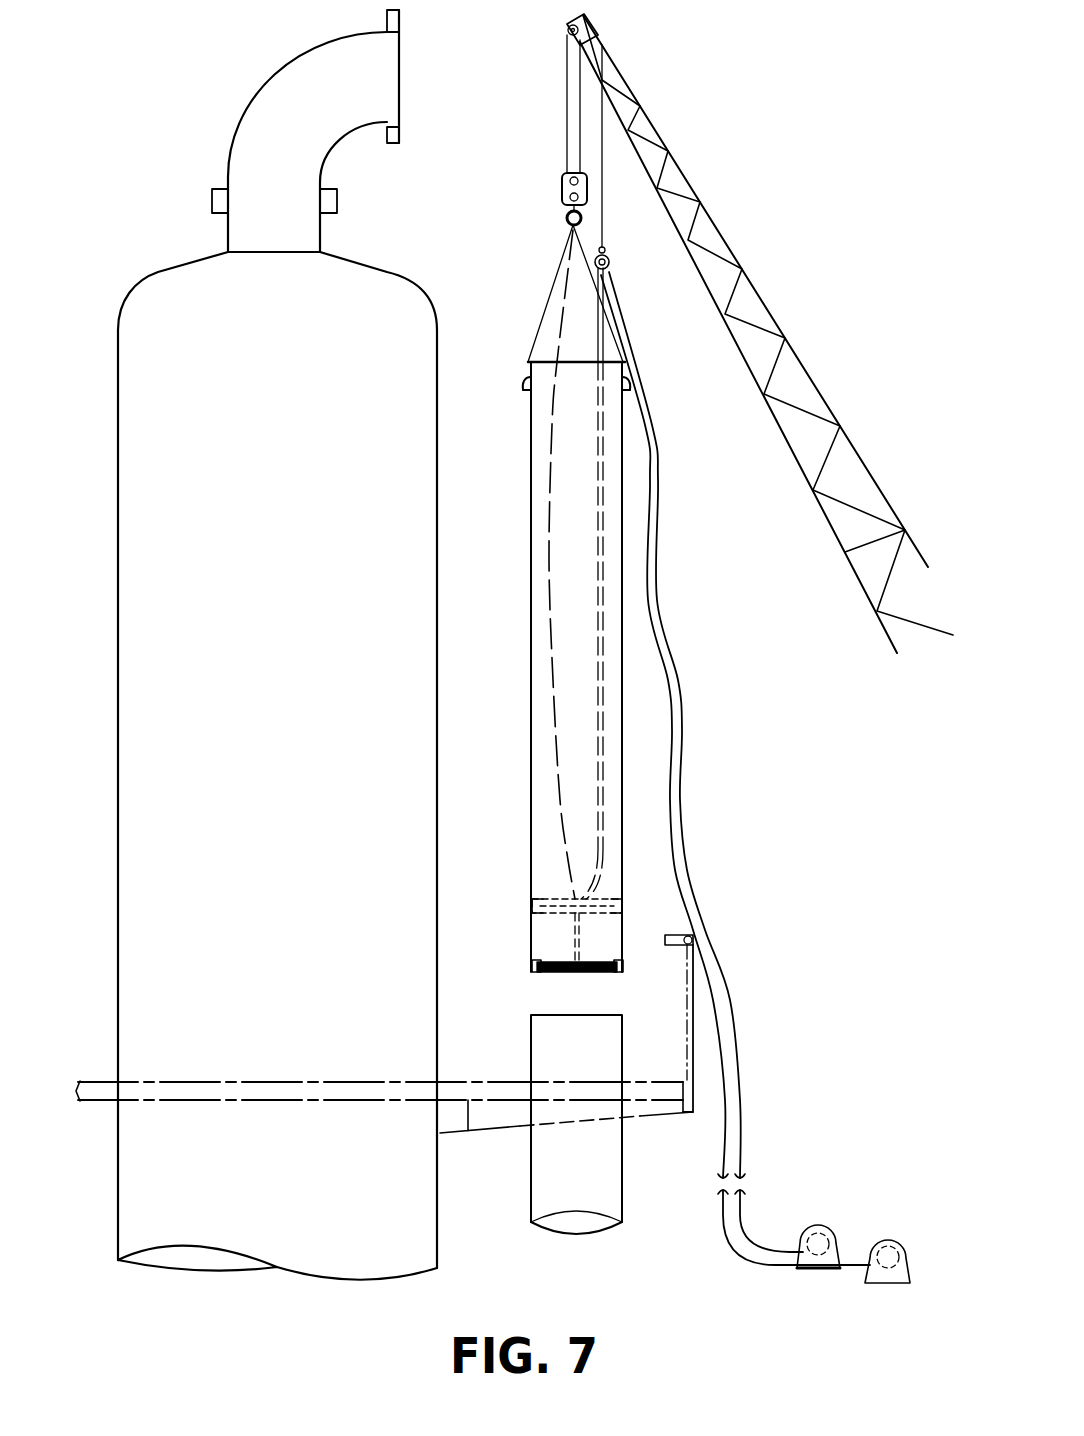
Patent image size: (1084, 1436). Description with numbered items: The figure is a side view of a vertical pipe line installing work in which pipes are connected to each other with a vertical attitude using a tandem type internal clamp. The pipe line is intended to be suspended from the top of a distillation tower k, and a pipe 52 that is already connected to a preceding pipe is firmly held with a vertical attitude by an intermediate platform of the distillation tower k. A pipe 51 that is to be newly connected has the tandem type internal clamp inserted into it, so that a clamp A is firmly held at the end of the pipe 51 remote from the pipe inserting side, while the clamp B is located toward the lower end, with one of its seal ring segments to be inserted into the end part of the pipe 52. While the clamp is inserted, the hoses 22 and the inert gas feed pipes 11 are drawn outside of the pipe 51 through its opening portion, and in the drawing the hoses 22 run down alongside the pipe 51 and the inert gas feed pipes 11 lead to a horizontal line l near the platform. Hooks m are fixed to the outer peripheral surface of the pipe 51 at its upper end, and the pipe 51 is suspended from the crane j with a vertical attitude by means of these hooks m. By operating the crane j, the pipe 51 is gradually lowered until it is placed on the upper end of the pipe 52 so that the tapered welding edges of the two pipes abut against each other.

The crane j is at (721, 222).
The distillation tower k is at (405, 480).
The hooks m is at (520, 384).
The pipe 51 is at (530, 556).
The clamp A is at (532, 904).
The clamp B is at (535, 968).
The pipe l is at (655, 1090).
The inert gas feed pipes 11 is at (716, 1008).
The hoses 22 is at (730, 990).
The pipe 52 is at (600, 1165).